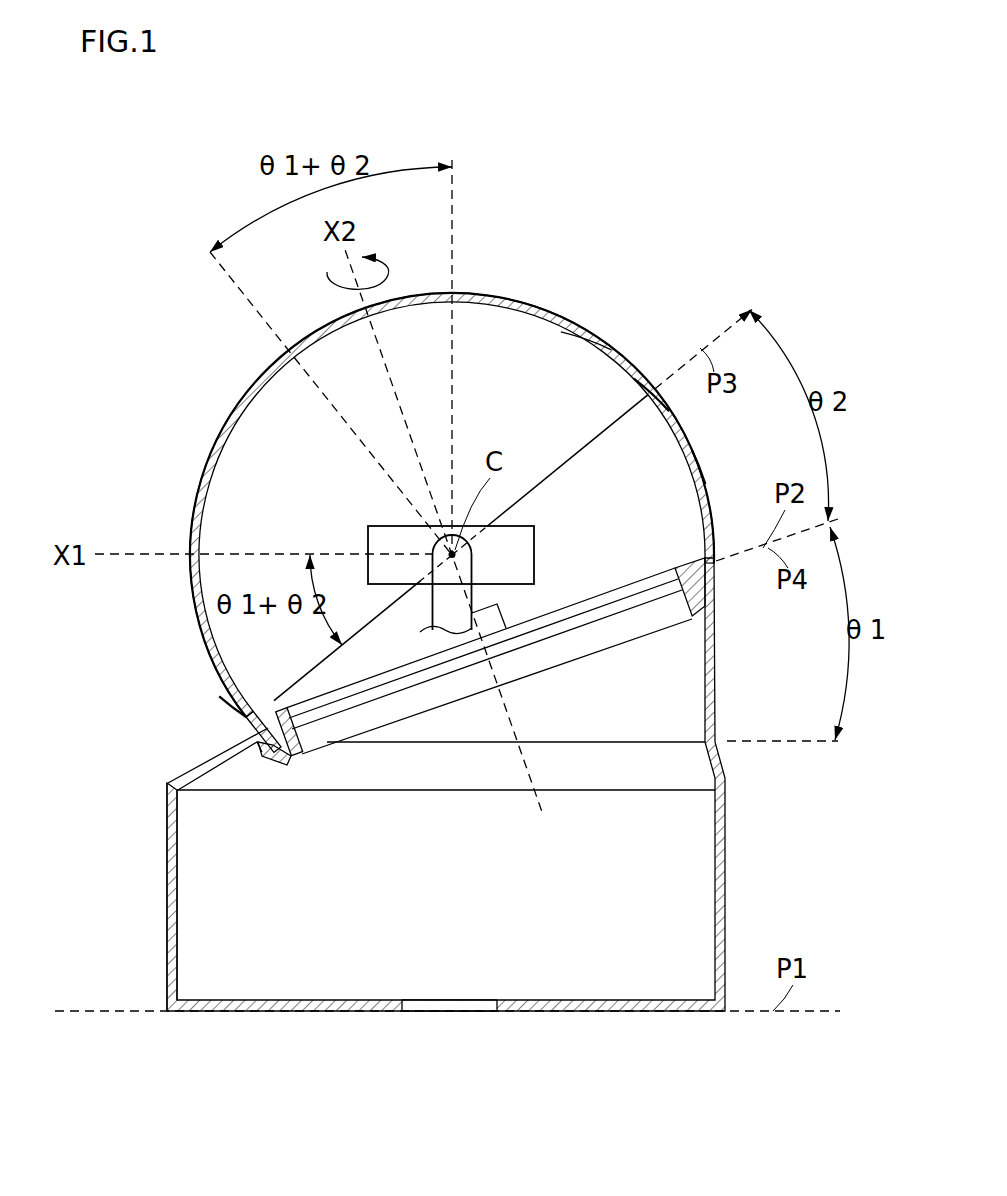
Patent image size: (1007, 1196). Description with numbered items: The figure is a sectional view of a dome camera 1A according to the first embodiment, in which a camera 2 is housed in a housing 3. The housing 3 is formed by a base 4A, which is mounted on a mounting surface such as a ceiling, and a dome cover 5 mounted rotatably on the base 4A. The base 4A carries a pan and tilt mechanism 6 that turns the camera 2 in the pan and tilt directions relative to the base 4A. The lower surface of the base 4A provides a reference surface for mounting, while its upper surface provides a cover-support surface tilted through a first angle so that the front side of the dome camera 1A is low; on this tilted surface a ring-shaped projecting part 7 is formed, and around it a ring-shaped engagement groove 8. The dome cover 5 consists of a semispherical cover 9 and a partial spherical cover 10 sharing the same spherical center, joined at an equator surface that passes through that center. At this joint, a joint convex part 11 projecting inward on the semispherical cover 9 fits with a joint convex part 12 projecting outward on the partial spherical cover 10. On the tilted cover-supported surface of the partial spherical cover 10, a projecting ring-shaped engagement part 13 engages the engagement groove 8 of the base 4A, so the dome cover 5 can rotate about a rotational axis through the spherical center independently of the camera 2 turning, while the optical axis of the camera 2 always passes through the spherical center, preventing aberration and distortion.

The dome camera 1A is at (718, 182).
The camera 2 is at (370, 530).
The housing 3 is at (729, 900).
The base 4A is at (167, 888).
The dome cover 5 is at (528, 297).
The pan and tilt mechanism 6 is at (476, 572).
The ring-shaped projecting part 7 is at (232, 690).
The ring-shaped engagement groove 8 is at (272, 716).
The semispherical cover 9 is at (598, 330).
The partial spherical cover 10 is at (699, 468).
The joint convex part 11 is at (640, 405).
The joint convex part 12 is at (651, 345).
The engagement part 13 is at (205, 695).